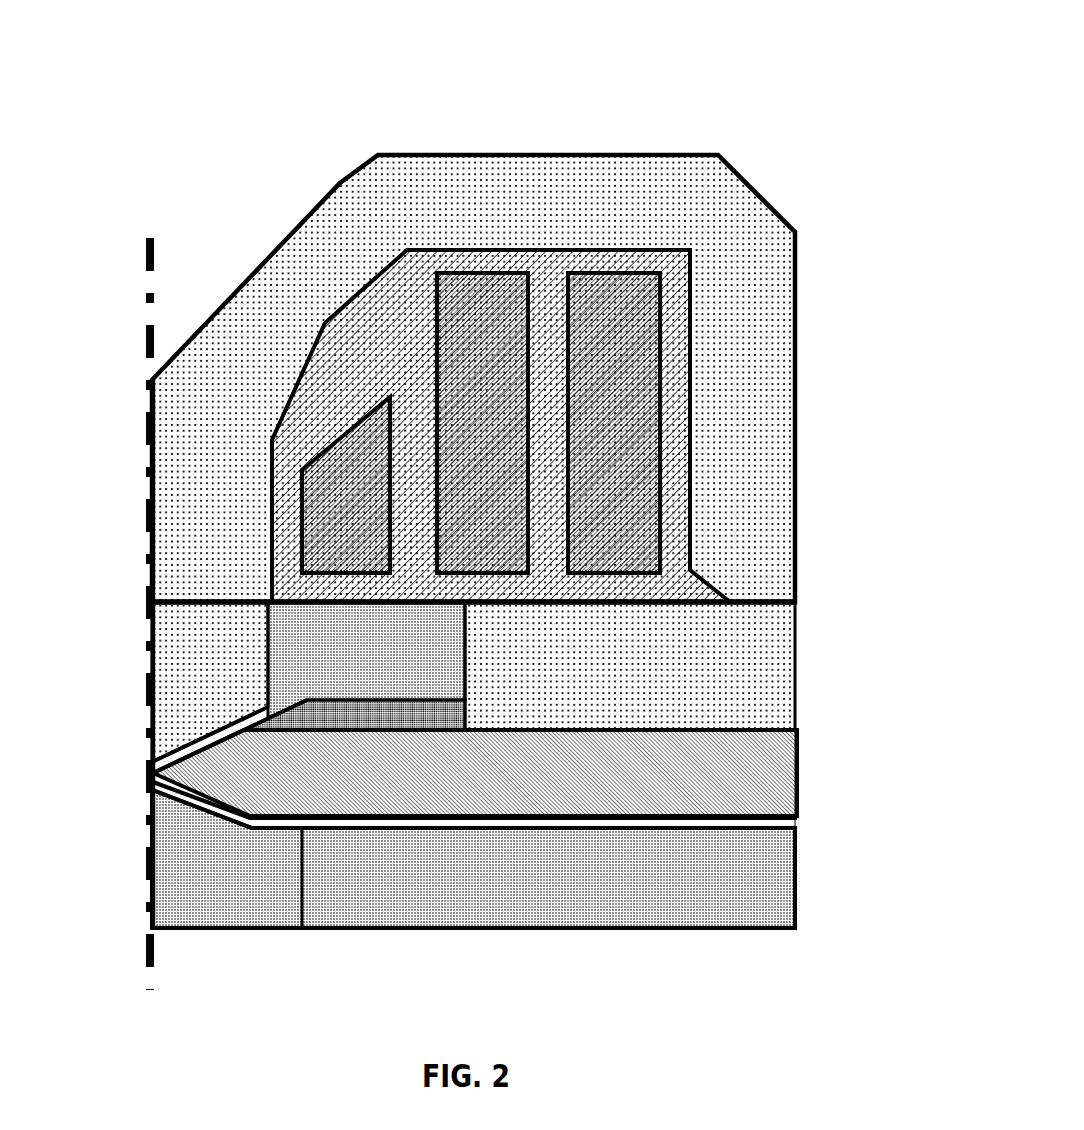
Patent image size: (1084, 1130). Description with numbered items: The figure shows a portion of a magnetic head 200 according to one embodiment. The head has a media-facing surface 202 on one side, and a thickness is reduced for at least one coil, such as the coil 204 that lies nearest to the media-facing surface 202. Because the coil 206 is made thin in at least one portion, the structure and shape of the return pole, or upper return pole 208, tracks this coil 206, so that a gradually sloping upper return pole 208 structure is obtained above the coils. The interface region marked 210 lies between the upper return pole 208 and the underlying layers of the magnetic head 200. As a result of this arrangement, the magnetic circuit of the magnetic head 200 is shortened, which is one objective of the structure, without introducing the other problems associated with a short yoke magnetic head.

The magnetic head 200 is at (214, 72).
The media-facing surface 202 is at (147, 340).
The coil 204 is at (328, 518).
The coil 206 is at (619, 551).
The upper return pole 208 is at (531, 210).
The interface / surface 210 is at (818, 600).